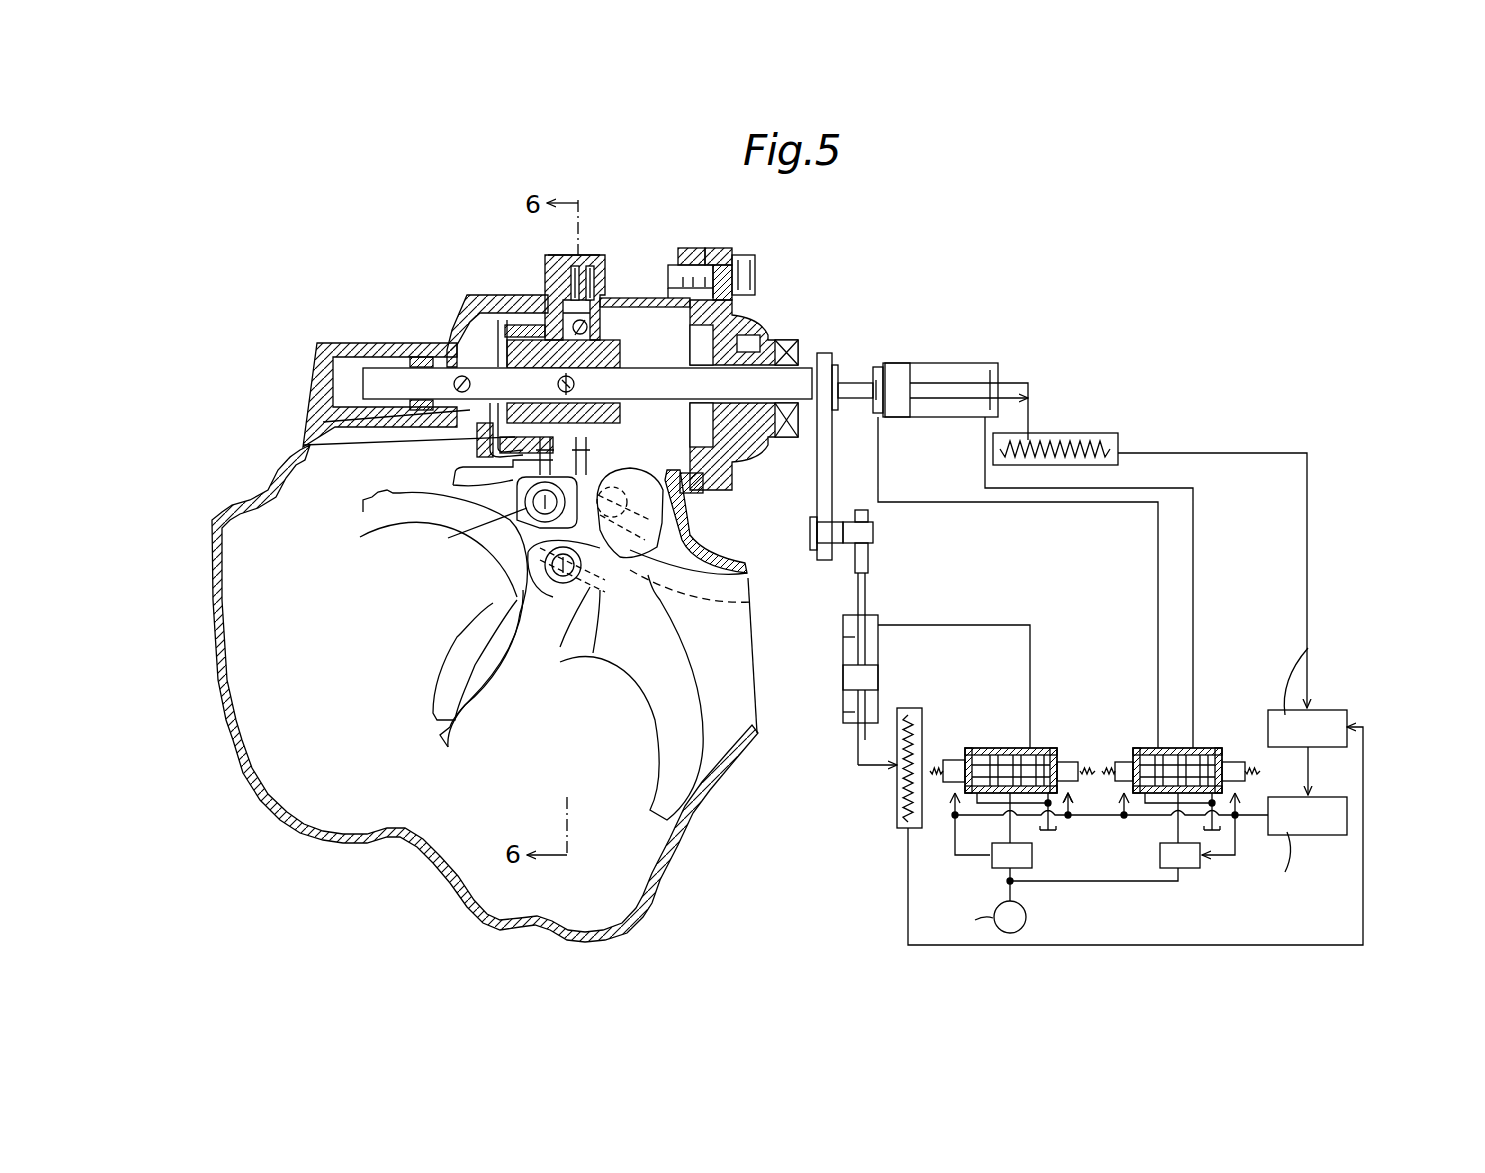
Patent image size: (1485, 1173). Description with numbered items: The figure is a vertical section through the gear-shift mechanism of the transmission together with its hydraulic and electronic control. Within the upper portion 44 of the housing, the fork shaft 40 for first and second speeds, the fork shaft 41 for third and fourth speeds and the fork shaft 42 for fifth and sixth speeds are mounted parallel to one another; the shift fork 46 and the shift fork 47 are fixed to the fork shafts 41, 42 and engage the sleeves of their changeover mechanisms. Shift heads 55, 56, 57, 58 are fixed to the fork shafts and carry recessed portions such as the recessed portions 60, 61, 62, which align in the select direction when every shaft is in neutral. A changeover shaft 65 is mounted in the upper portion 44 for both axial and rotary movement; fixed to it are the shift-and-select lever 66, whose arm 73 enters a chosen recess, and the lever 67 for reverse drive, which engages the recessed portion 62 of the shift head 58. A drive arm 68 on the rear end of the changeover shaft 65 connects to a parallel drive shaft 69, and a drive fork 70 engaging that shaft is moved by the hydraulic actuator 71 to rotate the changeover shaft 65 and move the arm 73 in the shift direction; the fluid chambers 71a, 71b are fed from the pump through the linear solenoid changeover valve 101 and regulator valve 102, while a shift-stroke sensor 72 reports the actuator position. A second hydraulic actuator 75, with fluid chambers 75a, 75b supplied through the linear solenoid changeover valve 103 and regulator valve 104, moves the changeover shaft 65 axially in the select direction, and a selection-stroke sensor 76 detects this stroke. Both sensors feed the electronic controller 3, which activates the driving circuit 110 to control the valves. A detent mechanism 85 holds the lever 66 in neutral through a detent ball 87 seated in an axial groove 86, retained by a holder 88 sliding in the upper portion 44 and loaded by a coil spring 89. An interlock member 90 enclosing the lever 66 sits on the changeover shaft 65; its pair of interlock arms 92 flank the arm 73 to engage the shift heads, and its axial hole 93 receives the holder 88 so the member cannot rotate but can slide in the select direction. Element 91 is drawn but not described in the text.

The electronic controller 3 is at (1322, 712).
The fork shaft for 1st-2nd speeds 40 is at (490, 553).
The fork shaft for 3rd-4th speeds 41 is at (473, 620).
The fork shaft for 5th-6th speeds 42 is at (748, 601).
The upper portion of the transmission housing 44 is at (217, 516).
The shift fork for 3rd-4th speeds 46 is at (528, 700).
The shift fork for 5th-6th speeds 47 is at (662, 742).
The shift head 55 is at (540, 580).
The shift head 56 is at (597, 645).
The shift head 57 is at (740, 574).
The shift head 58 is at (437, 495).
The recessed portion 60 is at (690, 506).
The recessed portion 61 is at (598, 447).
The recessed portion 62 is at (476, 540).
The changeover shaft 65 is at (800, 372).
The shift-and-select lever 66 is at (369, 423).
The lever for reverse drive 67 is at (445, 343).
The drive arm 68 is at (824, 428).
The drive shaft 69 is at (848, 542).
The drive fork 70 is at (870, 575).
The hydraulic actuator 71 is at (843, 670).
The fluid chamber 71a is at (843, 714).
The fluid chamber 71b is at (843, 640).
The shift-stroke sensor 72 is at (897, 800).
The arm of the shift-and-select lever 73 is at (300, 446).
The hydraulic actuator 75 is at (943, 363).
The fluid chamber 75a is at (880, 368).
The fluid chamber 75b is at (985, 375).
The selection-stroke sensor 76 is at (1078, 433).
The detent mechanism 85 is at (590, 252).
The axial groove 86 is at (555, 340).
The detent ball 87 is at (577, 322).
The holder 88 is at (598, 262).
The coil spring 89 is at (578, 266).
The interlock member 90 is at (466, 296).
The cover wall 91 is at (450, 340).
The interlock arms 92 is at (453, 484).
The axial hole 93 is at (520, 325).
The linear solenoid changeover valve 101 is at (1010, 748).
The regulator valve 102 is at (1032, 856).
The linear solenoid changeover valve 103 is at (1150, 748).
The regulator valve 104 is at (1160, 853).
The driving circuit 110 is at (1322, 797).